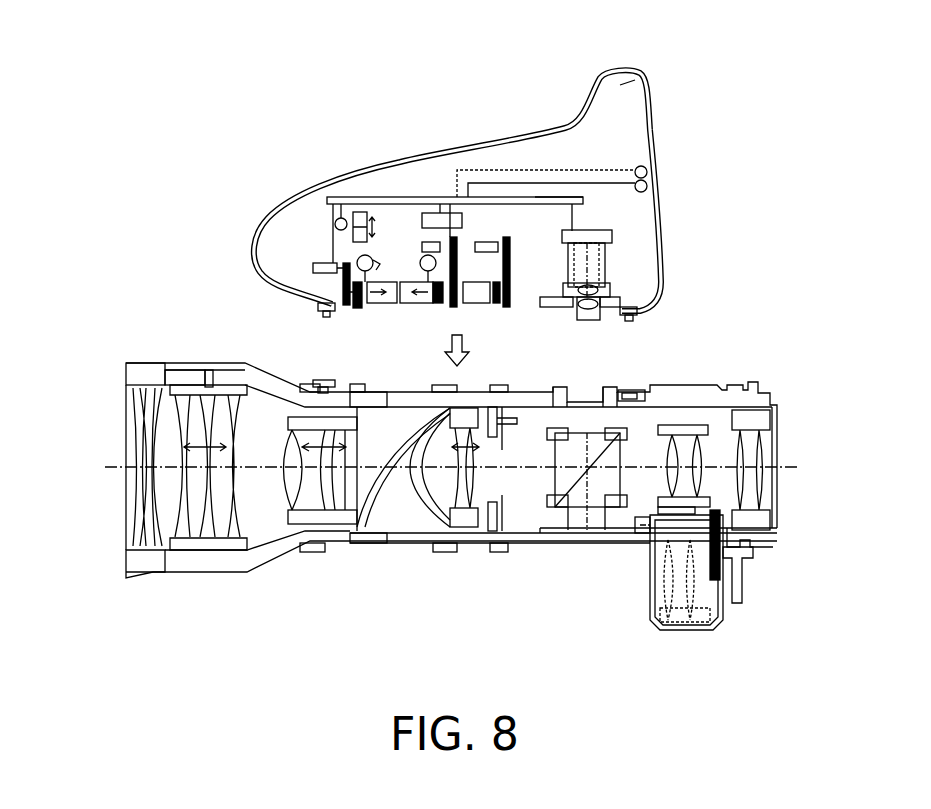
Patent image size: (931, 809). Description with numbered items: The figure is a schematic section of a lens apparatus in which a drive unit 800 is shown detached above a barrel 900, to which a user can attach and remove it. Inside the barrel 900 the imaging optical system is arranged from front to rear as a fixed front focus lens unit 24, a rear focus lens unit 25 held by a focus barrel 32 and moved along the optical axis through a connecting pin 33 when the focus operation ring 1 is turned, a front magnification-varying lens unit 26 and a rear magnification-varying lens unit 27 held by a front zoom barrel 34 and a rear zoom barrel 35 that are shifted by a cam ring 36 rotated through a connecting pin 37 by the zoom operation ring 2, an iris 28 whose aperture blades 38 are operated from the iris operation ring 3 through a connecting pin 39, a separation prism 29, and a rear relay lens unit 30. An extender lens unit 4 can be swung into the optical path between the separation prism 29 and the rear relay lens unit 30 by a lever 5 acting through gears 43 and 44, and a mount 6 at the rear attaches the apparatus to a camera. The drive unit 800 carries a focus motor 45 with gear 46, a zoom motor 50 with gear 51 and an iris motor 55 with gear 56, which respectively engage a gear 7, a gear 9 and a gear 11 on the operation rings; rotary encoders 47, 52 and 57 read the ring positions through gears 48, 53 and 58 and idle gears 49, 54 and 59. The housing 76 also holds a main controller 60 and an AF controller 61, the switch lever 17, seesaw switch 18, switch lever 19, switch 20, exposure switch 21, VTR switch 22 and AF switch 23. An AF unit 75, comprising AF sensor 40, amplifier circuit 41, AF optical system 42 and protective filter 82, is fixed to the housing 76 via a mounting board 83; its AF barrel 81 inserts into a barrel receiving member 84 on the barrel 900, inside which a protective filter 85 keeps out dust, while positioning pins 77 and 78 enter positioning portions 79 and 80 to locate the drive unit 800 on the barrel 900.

The focus operation ring 1 is at (227, 572).
The zoom operation ring 2 is at (425, 553).
The iris operation ring 3 is at (515, 533).
The extender lens unit 4 is at (662, 615).
The lever 5 is at (737, 603).
The mount 6 is at (748, 545).
The gear 7 is at (358, 530).
The gear 9 is at (443, 527).
The gear 11 is at (505, 531).
The switch lever 17 is at (343, 265).
The seesaw switch 18 is at (440, 197).
The switch lever 19 is at (412, 197).
The switch 20 is at (338, 196).
The exposure switch 21 is at (353, 232).
The VTR switch 22 is at (640, 200).
The AF switch 23 is at (648, 180).
The front focus lens unit 24 is at (127, 573).
The rear focus lens unit 25 is at (185, 560).
The front magnification-varying lens unit 26 is at (273, 563).
The rear magnification-varying lens unit 27 is at (462, 527).
The iris 28 is at (502, 552).
The separation prism 29 is at (585, 507).
The rear relay lens unit 30 is at (770, 535).
The focus barrel 32 is at (163, 367).
The connecting pin 33 is at (210, 380).
The front zoom barrel 34 is at (320, 525).
The rear zoom barrel 35 is at (470, 527).
The cam ring 36 is at (382, 545).
The connecting pin 37 is at (410, 535).
The aperture blades 38 is at (503, 505).
The connecting pin 39 is at (520, 397).
The AF sensor 40 is at (606, 262).
The amplifier circuit 41 is at (610, 232).
The AF optical system 42 is at (608, 297).
The gear 43 is at (717, 580).
The gear 44 is at (707, 518).
The focus motor 45 is at (350, 197).
The gear 46 is at (365, 300).
The rotary encoder 47 is at (353, 284).
The gear 48 is at (325, 263).
The idle gear 49 is at (360, 292).
The zoom motor 50 is at (385, 197).
The gear 51 is at (392, 197).
The rotary encoder 52 is at (422, 197).
The gear 53 is at (455, 197).
The idle gear 54 is at (475, 197).
The iris motor 55 is at (488, 197).
The gear 56 is at (515, 197).
The rotary encoder 57 is at (500, 197).
The gear 58 is at (530, 197).
The idle gear 59 is at (575, 197).
The main controller 60 is at (338, 194).
The AF controller 61 is at (612, 118).
The AF unit 75 is at (612, 285).
The housing 76 is at (655, 168).
The positioning pin 77 is at (320, 306).
The positioning pin 78 is at (635, 312).
The positioning portion 79 is at (320, 385).
The positioning portion 80 is at (632, 392).
The AF barrel 81 is at (570, 305).
The protective filter 82 is at (598, 314).
The mounting board 83 is at (600, 305).
The barrel receiving member 84 is at (612, 387).
The protective filter 85 is at (587, 433).
The drive unit 800 is at (652, 98).
The barrel 900 is at (707, 384).